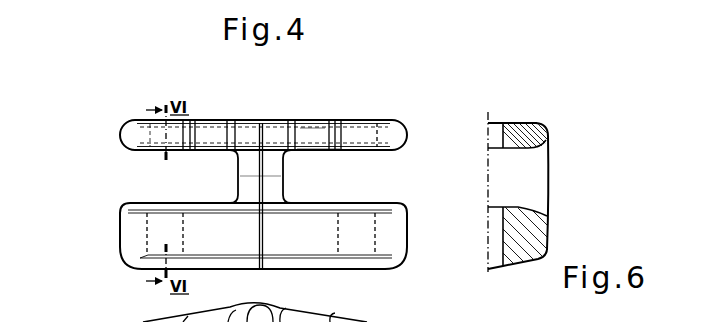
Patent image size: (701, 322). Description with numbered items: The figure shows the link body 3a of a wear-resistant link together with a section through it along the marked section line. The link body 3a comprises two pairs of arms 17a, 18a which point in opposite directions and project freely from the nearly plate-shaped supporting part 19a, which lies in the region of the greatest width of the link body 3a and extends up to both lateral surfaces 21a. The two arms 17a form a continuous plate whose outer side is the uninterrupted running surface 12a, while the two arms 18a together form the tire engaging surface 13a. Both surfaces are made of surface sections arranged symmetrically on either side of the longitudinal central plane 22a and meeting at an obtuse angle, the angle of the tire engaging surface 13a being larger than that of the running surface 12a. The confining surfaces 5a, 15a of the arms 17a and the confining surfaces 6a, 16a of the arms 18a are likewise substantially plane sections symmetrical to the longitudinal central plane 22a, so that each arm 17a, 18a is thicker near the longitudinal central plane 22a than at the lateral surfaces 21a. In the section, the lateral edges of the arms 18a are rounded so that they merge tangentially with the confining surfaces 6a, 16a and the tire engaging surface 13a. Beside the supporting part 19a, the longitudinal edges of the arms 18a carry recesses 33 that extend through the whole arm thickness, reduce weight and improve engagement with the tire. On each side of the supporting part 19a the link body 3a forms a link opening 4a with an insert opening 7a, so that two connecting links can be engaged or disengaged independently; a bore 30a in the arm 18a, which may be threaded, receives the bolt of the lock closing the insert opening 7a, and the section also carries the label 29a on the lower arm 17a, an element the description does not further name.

In FIG. 4, the link body 3a is at (103, 148).
In FIG. 4, the link opening 4a is at (217, 195).
In FIG. 4, the confining surface 5a is at (307, 203).
In FIG. 4, the confining surface 6a is at (311, 152).
In FIG. 4, the insert opening 7a is at (133, 179).
In FIG. 4, the running surface 12a is at (270, 268).
In FIG. 6, the running surface 12a is at (497, 271).
In FIG. 4, the tire engaging surface 13a is at (294, 120).
In FIG. 6, the tire engaging surface 13a is at (500, 121).
In FIG. 6, the confining surface 15a is at (525, 207).
In FIG. 6, the confining surface 16a is at (519, 149).
In FIG. 4, the arm 17a is at (145, 257).
In FIG. 4, the arm 18a is at (150, 130).
In FIG. 6, the arm 18a is at (526, 123).
In FIG. 4, the supporting part 19a is at (248, 168).
In FIG. 4, the lateral surface 21a is at (204, 318).
In FIG. 6, the longitudinal central plane 22a is at (488, 181).
In FIG. 6, the lower flange 29a is at (503, 233).
In FIG. 6, the bore 30a is at (503, 133).
In FIG. 4, the recess 33 is at (318, 130).